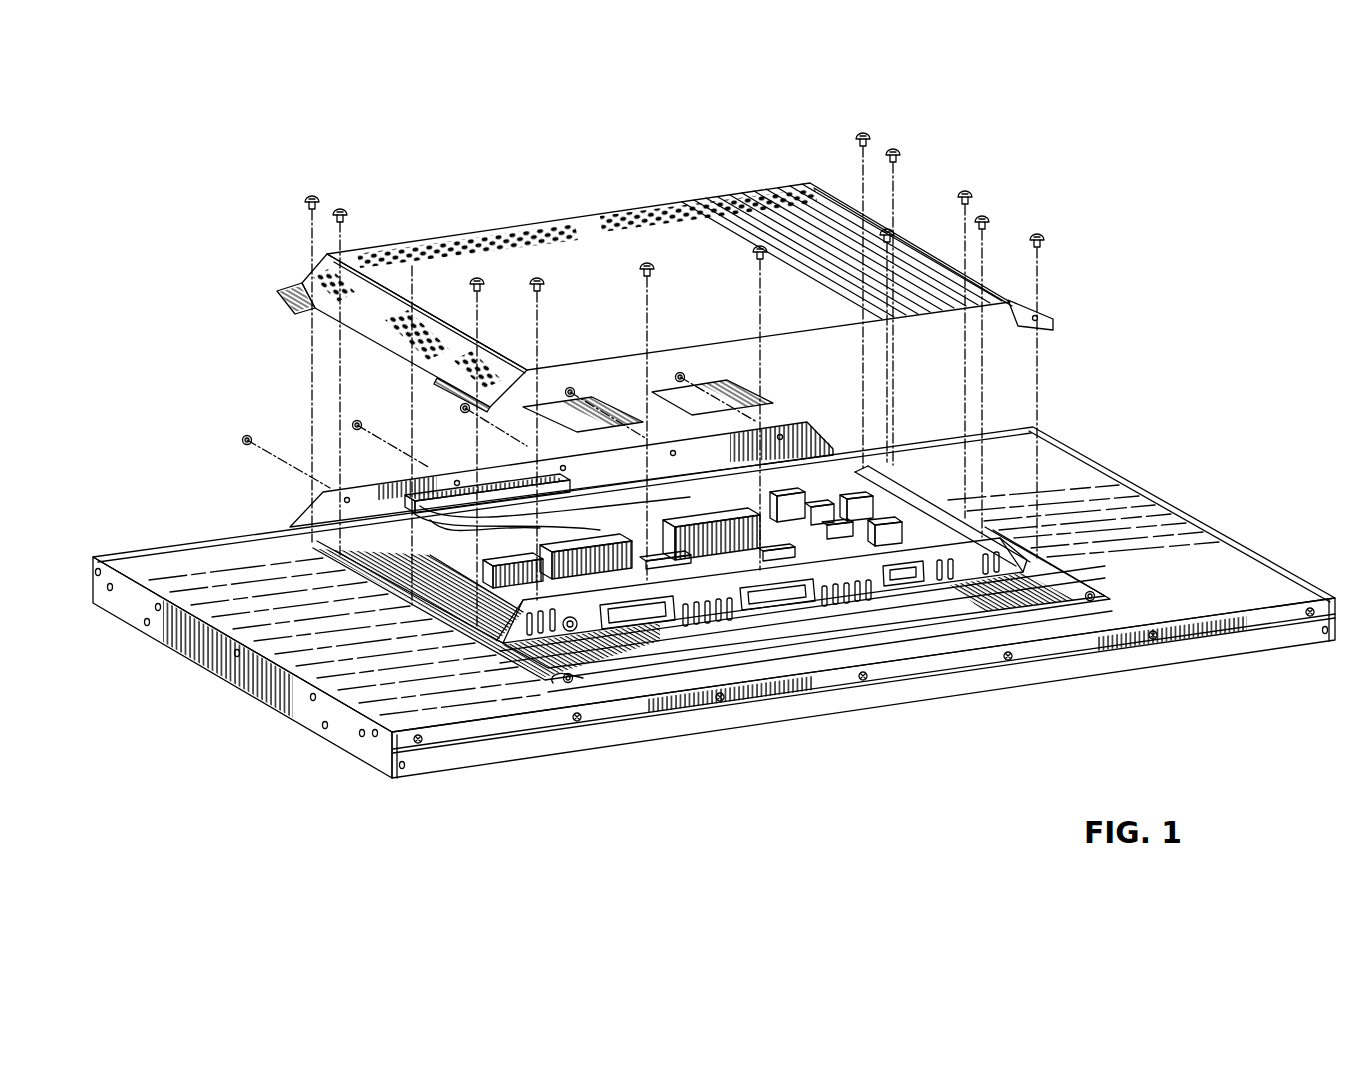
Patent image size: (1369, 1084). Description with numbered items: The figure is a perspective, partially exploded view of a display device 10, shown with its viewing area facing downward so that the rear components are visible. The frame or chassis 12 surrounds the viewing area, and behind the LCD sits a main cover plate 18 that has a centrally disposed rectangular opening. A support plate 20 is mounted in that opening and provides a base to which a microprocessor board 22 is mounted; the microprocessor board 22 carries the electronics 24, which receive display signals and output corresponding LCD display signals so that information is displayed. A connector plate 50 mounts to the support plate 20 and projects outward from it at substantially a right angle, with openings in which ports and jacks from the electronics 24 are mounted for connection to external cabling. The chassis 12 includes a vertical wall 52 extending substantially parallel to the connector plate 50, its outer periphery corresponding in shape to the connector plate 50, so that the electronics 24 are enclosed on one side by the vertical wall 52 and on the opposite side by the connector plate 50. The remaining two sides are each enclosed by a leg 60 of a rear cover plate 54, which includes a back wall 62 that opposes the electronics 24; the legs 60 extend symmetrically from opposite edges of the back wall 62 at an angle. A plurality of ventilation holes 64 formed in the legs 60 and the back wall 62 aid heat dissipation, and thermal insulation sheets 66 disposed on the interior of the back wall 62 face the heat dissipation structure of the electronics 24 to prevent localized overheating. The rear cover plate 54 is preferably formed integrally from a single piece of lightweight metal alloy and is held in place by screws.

The display device 10 is at (273, 804).
The frame or chassis 12 is at (636, 746).
The main cover plate 18 is at (1200, 541).
The support plate 20 is at (777, 633).
The microprocessor board 22 is at (485, 558).
The electronics 24 is at (920, 406).
The connector plate 50 is at (985, 531).
The vertical wall 52 is at (795, 425).
The rear cover plate 54 is at (616, 175).
The leg 60 is at (308, 278).
The back wall 62 is at (822, 222).
The ventilation holes 64 is at (470, 236).
The thermal insulation sheets 66 is at (600, 412).